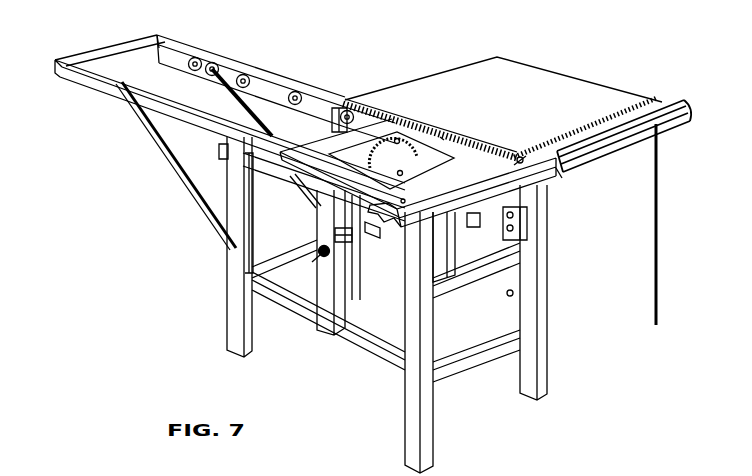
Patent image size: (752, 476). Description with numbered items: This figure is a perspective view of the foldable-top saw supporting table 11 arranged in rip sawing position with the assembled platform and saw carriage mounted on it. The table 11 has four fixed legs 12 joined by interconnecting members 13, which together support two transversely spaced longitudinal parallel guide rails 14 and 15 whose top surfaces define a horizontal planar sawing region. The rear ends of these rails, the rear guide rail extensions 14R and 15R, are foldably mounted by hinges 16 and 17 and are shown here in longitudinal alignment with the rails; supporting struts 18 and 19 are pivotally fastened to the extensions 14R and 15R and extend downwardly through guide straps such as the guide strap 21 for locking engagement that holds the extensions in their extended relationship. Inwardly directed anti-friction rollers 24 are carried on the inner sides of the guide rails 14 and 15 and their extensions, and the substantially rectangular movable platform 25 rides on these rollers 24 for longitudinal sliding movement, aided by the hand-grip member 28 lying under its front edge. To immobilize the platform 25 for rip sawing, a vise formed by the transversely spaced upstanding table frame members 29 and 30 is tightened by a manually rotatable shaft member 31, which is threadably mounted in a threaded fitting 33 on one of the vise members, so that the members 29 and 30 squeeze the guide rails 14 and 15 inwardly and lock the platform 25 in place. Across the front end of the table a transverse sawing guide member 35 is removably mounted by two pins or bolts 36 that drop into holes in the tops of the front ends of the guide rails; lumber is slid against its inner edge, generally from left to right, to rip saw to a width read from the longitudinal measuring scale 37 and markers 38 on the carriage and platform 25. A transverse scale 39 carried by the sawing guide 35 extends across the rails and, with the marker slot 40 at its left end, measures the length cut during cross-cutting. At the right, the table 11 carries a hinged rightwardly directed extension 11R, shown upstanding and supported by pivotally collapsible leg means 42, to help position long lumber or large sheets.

The saw supporting table 11 is at (118, 312).
The rightwardly directed extension 11R is at (557, 64).
The fixed legs 12 is at (246, 222).
The interconnecting members 13 is at (300, 262).
The guide rail 14 is at (243, 163).
The rear guide rail extension 14R is at (107, 88).
The guide rail 15 is at (366, 110).
The rear guide rail extension 15R is at (242, 63).
The hinge 16 is at (221, 152).
The hinge 17 is at (337, 107).
The supporting strut 18 is at (167, 160).
The supporting strut 19 is at (252, 108).
The guide strap 21 is at (334, 231).
The anti-friction rollers 24 is at (300, 93).
The movable platform 25 is at (557, 173).
The hand-grip member 28 is at (528, 200).
The upstanding vise member 29 is at (313, 197).
The upstanding vise member 30 is at (447, 247).
The manually rotatable shaft member 31 is at (374, 230).
The threaded fitting 33 is at (320, 260).
The transverse sawing guide member 35 is at (676, 103).
The pins or bolts 36 is at (521, 157).
The longitudinal measuring scale 37 is at (423, 124).
The markers 38 is at (442, 136).
The transverse scale 39 is at (577, 129).
The marker slot 40 is at (405, 156).
The pivotally collapsible leg means 42 is at (657, 218).